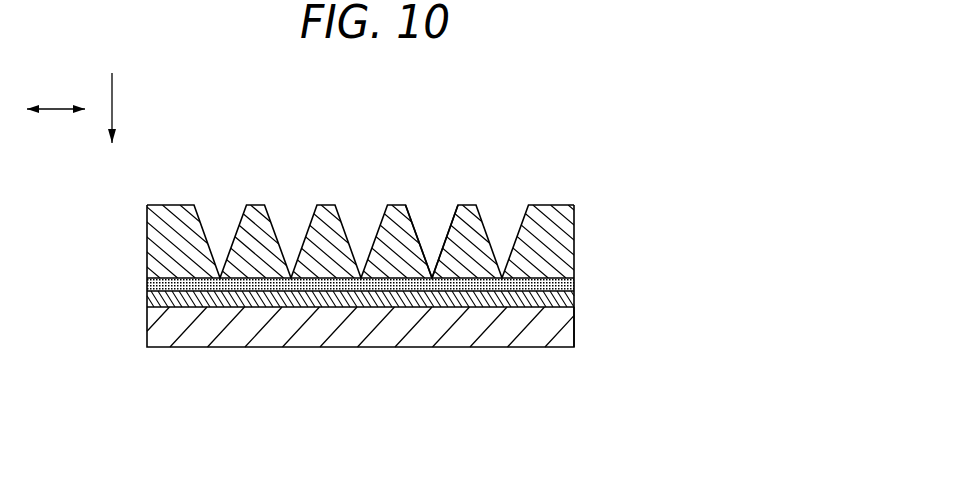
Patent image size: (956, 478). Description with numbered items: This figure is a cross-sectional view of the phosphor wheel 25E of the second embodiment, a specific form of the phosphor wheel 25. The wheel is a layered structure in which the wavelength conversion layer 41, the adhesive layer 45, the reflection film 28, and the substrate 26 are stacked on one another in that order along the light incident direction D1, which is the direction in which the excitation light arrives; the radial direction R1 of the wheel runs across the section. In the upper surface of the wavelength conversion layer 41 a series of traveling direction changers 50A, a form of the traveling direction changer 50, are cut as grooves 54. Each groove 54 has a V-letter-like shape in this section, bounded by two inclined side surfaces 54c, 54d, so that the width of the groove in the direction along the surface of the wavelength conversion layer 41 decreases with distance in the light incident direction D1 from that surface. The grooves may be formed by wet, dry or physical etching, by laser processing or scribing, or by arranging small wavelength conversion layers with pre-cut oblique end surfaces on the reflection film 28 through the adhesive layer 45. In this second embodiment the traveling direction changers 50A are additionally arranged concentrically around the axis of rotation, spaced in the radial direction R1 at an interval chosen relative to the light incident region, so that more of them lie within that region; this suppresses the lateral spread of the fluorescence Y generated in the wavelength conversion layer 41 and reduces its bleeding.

The radial direction R1 is at (56, 93).
The light incident direction D1 is at (128, 108).
The fluorescence Y is at (396, 229).
The wavelength conversion layer 41 is at (147, 248).
The adhesive layer 45 is at (147, 284).
The reflection film 28 is at (147, 298).
The substrate 26 is at (147, 328).
The groove 54 is at (458, 240).
The side surface of groove 54c is at (449, 257).
The side surface of groove 54d is at (423, 258).
The traveling direction changer 50A is at (527, 242).
The traveling direction changer 50 is at (352, 275).
The phosphor wheel 25E is at (590, 334).
The phosphor wheel 25 is at (648, 345).